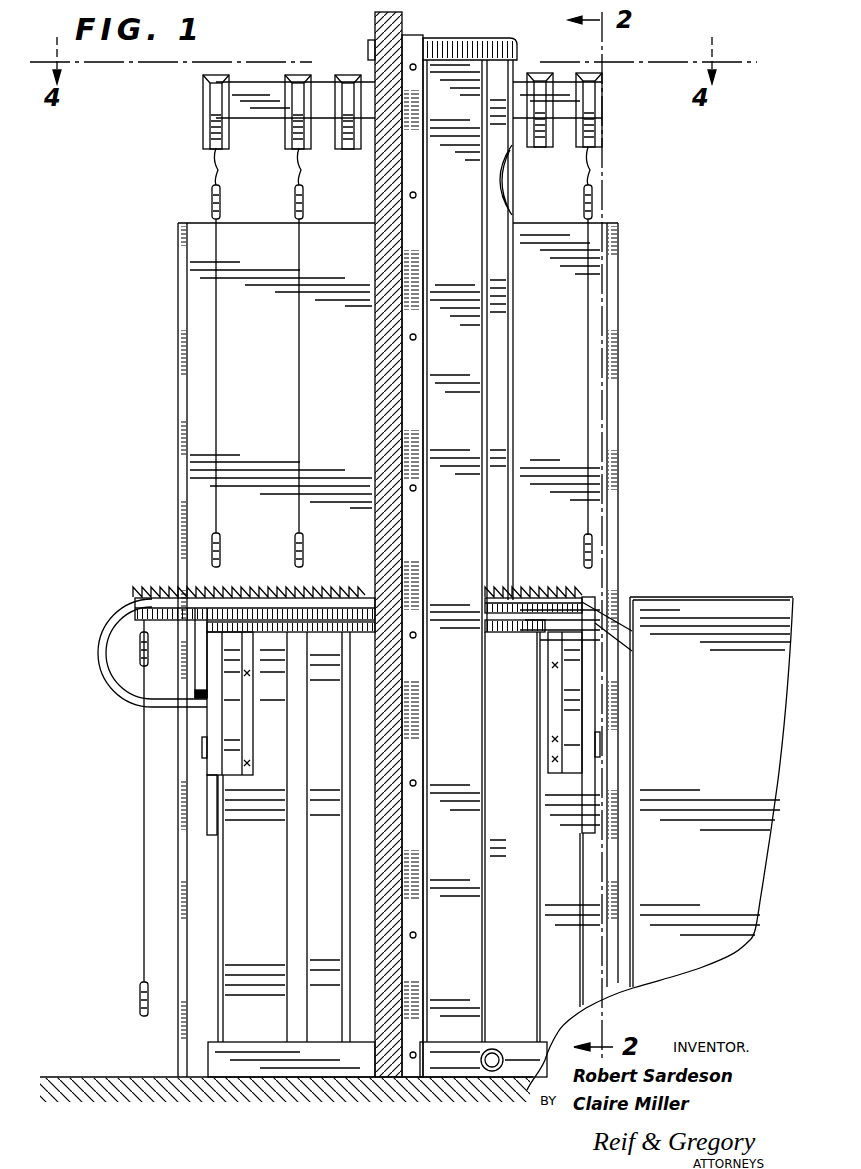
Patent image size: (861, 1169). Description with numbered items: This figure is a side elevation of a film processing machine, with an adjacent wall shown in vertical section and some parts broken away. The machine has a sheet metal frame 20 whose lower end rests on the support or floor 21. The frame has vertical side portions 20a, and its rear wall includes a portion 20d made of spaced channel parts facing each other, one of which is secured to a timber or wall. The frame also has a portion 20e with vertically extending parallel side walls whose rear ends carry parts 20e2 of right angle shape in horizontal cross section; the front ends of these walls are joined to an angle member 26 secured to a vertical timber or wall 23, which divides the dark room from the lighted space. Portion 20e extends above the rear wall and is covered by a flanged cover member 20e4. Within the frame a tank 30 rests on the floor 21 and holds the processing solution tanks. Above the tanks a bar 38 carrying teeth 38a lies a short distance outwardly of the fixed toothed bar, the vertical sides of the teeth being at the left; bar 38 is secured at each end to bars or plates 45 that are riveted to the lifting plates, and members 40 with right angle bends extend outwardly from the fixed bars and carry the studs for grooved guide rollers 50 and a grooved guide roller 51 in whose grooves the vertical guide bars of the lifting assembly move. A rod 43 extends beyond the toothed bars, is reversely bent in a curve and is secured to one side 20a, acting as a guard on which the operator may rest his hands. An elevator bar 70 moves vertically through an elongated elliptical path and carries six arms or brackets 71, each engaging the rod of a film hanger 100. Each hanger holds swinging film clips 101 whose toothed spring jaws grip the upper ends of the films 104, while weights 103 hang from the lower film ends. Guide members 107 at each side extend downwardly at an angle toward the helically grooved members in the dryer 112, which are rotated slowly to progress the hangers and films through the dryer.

The frame 20 is at (628, 238).
The vertical side portions 20a is at (178, 403).
The rear wall portion 20d is at (508, 192).
The frame portion 20e is at (494, 545).
The right angle parts 20e2 is at (505, 315).
The flanged cover member 20e4 is at (497, 54).
The support or floor 21 is at (500, 1082).
The vertical timber or wall 23 is at (377, 22).
The angle member 26 is at (417, 1020).
The tank 30 is at (233, 1060).
The toothed bar 38 is at (546, 594).
The teeth 38a is at (345, 592).
The members 40 is at (215, 790).
The rod 43 is at (99, 668).
The bars or plates 45 is at (250, 688).
The grooved guide rollers 50 is at (202, 748).
The grooved guide roller 51 is at (600, 745).
The elevator bar 70 is at (238, 94).
The arms or brackets 71 is at (285, 138).
The film hangers 100 is at (295, 168).
The film clips 101 is at (292, 202).
The weights 103 is at (295, 560).
The films 104 is at (299, 410).
The guide members 107 is at (618, 630).
The dryer 112 is at (712, 597).